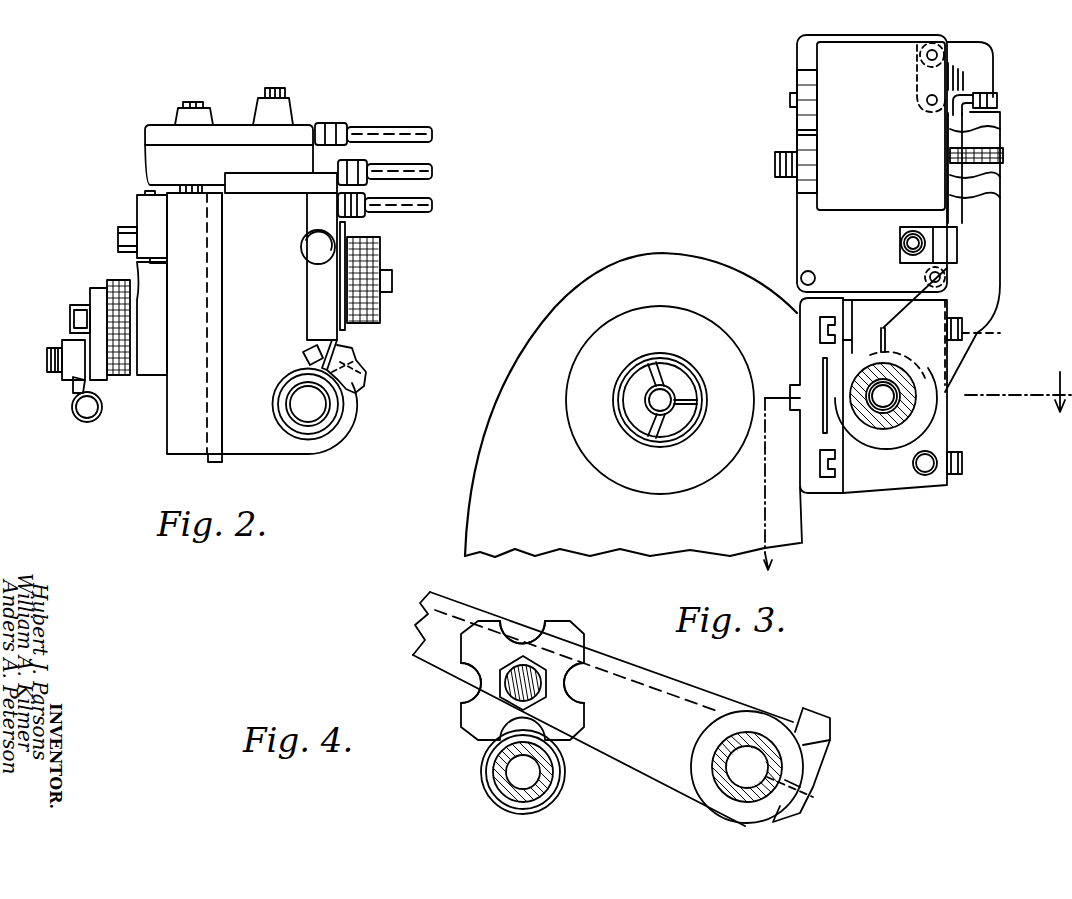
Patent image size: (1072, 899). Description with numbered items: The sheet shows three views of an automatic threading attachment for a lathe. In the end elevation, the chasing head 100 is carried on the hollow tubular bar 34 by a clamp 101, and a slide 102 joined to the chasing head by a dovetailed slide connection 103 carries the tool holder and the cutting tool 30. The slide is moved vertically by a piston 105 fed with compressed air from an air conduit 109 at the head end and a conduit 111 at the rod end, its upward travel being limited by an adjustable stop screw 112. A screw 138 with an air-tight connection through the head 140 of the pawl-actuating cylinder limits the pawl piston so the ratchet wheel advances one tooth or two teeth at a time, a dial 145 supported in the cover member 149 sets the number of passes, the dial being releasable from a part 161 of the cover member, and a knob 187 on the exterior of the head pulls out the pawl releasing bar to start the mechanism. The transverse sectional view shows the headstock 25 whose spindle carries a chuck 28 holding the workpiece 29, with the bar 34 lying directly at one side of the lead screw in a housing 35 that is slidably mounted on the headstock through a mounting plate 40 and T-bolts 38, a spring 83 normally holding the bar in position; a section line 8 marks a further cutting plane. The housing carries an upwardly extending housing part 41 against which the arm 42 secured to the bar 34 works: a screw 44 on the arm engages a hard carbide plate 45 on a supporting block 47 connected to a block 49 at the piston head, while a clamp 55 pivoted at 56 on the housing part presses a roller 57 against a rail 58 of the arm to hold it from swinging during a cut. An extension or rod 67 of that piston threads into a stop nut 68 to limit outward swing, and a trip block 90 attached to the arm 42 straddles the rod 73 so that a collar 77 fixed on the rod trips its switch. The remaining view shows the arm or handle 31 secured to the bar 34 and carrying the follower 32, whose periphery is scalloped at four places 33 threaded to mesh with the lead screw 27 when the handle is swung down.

In FIG. 2, the chasing head 100 is at (252, 196).
In FIG. 2, the clamp 101 is at (360, 393).
In FIG. 2, the slide 102 is at (167, 432).
In FIG. 2, the dovetailed slide connection 103 is at (213, 462).
In FIG. 2, the piston 105 is at (191, 185).
In FIG. 2, the air conduit 109 is at (400, 126).
In FIG. 2, the conduit 111 is at (414, 166).
In FIG. 2, the stop screw 112 is at (190, 104).
In FIG. 2, the screw 138 is at (275, 88).
In FIG. 2, the head of cylinder 140 is at (296, 128).
In FIG. 2, the dial 145 is at (380, 250).
In FIG. 2, the cover member 149 is at (320, 301).
In FIG. 2, the portion of cover member 161 is at (352, 327).
In FIG. 2, the knob 187 is at (301, 247).
In FIG. 2, the cutting tool 30 is at (68, 386).
In FIG. 2, the workpiece 29 is at (82, 422).
In FIG. 3, the workpiece 29 is at (660, 437).
In FIG. 2, the bar 34 is at (317, 434).
In FIG. 3, the bar 34 is at (892, 430).
In FIG. 4, the bar 34 is at (760, 740).
In FIG. 3, the headstock 25 is at (635, 262).
In FIG. 3, the collet or chuck 28 is at (660, 368).
In FIG. 3, the mounting plate 40 is at (800, 360).
In FIG. 3, the housing part 41 is at (795, 233).
In FIG. 3, the arm 42 is at (995, 292).
In FIG. 3, the housing 35 is at (950, 437).
In FIG. 3, the T-bolts 38 is at (965, 465).
In FIG. 3, the spring 83 is at (860, 408).
In FIG. 3, the section line 8 is at (774, 492).
In FIG. 3, the pivotal connection 56 is at (927, 55).
In FIG. 3, the clamp 55 is at (990, 52).
In FIG. 3, the roller 57 is at (997, 100).
In FIG. 3, the rail 58 is at (968, 90).
In FIG. 3, the block 49 is at (1000, 130).
In FIG. 3, the screw 44 is at (1003, 157).
In FIG. 3, the hard plate 45 is at (1000, 177).
In FIG. 3, the supporting block 47 is at (1000, 198).
In FIG. 3, the extension or rod 67 is at (775, 162).
In FIG. 3, the stop nut 68 is at (780, 177).
In FIG. 3, the rod 73 is at (902, 240).
In FIG. 3, the collar 77 is at (905, 250).
In FIG. 3, the trip block 90 is at (957, 236).
In FIG. 4, the arm or handle 31 is at (695, 690).
In FIG. 4, the follower 32 is at (508, 625).
In FIG. 4, the scalloped portions 33 is at (540, 625).
In FIG. 4, the lead screw 27 is at (560, 800).